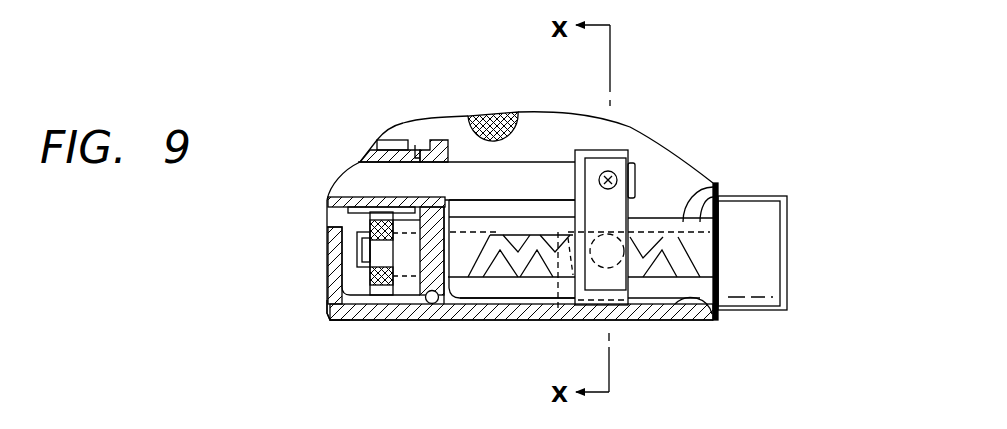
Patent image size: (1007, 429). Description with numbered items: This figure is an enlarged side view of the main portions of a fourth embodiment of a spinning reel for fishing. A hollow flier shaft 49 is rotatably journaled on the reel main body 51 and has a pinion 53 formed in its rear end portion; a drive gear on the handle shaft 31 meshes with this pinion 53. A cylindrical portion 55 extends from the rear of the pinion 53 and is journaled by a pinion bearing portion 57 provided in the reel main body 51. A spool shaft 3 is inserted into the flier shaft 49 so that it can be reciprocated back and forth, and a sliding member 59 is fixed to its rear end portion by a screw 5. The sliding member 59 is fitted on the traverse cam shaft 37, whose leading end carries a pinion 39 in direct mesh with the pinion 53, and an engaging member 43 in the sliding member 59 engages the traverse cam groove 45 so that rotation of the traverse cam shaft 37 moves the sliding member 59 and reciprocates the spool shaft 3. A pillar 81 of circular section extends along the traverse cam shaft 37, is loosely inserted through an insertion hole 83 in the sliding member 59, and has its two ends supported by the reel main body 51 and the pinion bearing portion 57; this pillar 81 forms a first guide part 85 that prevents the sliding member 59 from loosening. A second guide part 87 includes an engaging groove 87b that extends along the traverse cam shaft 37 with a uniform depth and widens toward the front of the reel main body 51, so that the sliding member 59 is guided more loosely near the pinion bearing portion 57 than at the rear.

The spool shaft 3 is at (542, 170).
The screw 5 is at (617, 180).
The handle shaft 31 is at (491, 112).
The traverse cam shaft 37 is at (693, 263).
The pinion 39 is at (327, 287).
The engaging member 43 is at (650, 218).
The traverse cam groove 45 is at (667, 250).
The flier shaft 49 is at (327, 206).
The reel main body 51 is at (326, 314).
The pinion 53 is at (387, 147).
The cylindrical portion 55 is at (428, 140).
The pinion bearing portion 57 is at (425, 262).
The sliding member 59 is at (617, 150).
The pillar 81 is at (720, 183).
The insertion hole 83 is at (558, 312).
The first guide part 85 is at (556, 211).
The second guide part 87 is at (642, 303).
The engaging groove 87b is at (700, 312).